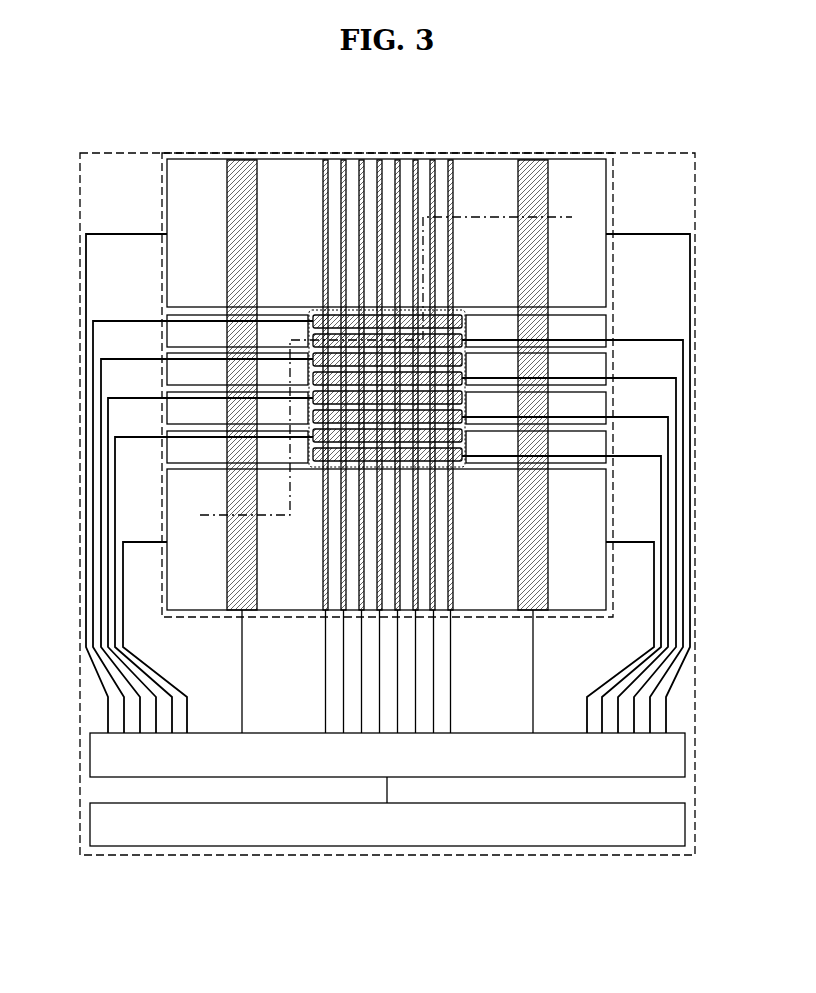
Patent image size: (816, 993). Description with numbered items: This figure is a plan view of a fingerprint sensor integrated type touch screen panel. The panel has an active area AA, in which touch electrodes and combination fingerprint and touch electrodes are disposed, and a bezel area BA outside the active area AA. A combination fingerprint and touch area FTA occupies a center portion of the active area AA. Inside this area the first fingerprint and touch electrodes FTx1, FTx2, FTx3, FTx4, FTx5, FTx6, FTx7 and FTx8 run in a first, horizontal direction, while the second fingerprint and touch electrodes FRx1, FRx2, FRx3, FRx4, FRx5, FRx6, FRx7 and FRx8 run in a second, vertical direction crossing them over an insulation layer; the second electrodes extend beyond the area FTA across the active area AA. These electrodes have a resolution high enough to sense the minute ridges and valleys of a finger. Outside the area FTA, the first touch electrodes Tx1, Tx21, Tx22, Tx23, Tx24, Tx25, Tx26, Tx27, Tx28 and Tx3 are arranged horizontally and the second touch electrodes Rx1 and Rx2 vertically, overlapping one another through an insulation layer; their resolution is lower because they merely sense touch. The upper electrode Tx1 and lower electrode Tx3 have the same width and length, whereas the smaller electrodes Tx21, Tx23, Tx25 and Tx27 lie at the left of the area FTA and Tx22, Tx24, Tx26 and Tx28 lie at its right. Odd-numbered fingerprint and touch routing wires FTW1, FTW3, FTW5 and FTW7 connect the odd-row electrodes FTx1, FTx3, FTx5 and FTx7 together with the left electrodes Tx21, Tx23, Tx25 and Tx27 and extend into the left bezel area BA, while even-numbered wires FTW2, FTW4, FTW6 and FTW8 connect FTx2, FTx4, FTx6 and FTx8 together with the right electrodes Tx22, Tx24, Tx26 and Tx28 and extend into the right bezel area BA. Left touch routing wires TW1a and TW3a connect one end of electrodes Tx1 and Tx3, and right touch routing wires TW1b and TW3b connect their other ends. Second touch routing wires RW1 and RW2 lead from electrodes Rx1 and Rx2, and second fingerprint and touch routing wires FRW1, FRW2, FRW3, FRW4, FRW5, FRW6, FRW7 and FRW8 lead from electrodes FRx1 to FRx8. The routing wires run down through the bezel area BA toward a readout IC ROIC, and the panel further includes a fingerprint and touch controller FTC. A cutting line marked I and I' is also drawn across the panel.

The 1-1 touch electrode Tx1 is at (607, 192).
The 1-2 left touch electrode Tx21 is at (166, 335).
The 1-2 right touch electrode Tx22 is at (607, 328).
The 1-2 left touch electrode Tx23 is at (166, 373).
The 1-2 right touch electrode Tx24 is at (607, 367).
The 1-2 left touch electrode Tx25 is at (166, 412).
The 1-2 right touch electrode Tx26 is at (607, 405).
The 1-2 left touch electrode Tx27 is at (166, 450).
The 1-2 right touch electrode Tx28 is at (607, 443).
The 1-3 touch electrode Tx3 is at (607, 500).
The second touch electrode Rx1 is at (243, 164).
The second touch electrode Rx2 is at (534, 164).
The second fingerprint and touch electrode FRx1 is at (325, 160).
The second fingerprint and touch electrode FRx2 is at (343, 160).
The second fingerprint and touch electrode FRx3 is at (361, 160).
The second fingerprint and touch electrode FRx4 is at (379, 160).
The second fingerprint and touch electrode FRx5 is at (397, 160).
The second fingerprint and touch electrode FRx6 is at (415, 160).
The second fingerprint and touch electrode FRx7 is at (433, 160).
The second fingerprint and touch electrode FRx8 is at (450, 160).
The combination fingerprint and touch area FTA is at (315, 310).
The first fingerprint and touch electrode FTx1 is at (447, 321).
The first fingerprint and touch electrode FTx2 is at (438, 340).
The first fingerprint and touch electrode FTx3 is at (426, 359).
The first fingerprint and touch electrode FTx4 is at (412, 378).
The first fingerprint and touch electrode FTx5 is at (415, 400).
The first fingerprint and touch electrode FTx6 is at (428, 419).
The first fingerprint and touch electrode FTx7 is at (440, 438).
The first fingerprint and touch electrode FTx8 is at (452, 457).
The 1-1 left touch routing wire TW1a is at (86, 285).
The 1-1 right touch routing wire TW1b is at (690, 286).
The 1-1 left touch routing wire TW3a is at (123, 613).
The 1-1 right touch routing wire TW3b is at (654, 613).
The 1-1 fingerprint and touch routing wire FTW1 is at (93, 489).
The 1-2 fingerprint and touch routing wire FTW2 is at (683, 488).
The 1-1 fingerprint and touch routing wire FTW3 is at (101, 515).
The 1-2 fingerprint and touch routing wire FTW4 is at (676, 515).
The 1-1 fingerprint and touch routing wire FTW5 is at (108, 540).
The 1-2 fingerprint and touch routing wire FTW6 is at (668, 542).
The 1-1 fingerprint and touch routing wire FTW7 is at (115, 567).
The 1-2 fingerprint and touch routing wire FTW8 is at (661, 567).
The second touch routing wire RW1 is at (242, 653).
The second touch routing wire RW2 is at (534, 653).
The second fingerprint and touch routing wire FRW1 is at (325, 653).
The second fingerprint and touch routing wire FRW2 is at (343, 670).
The second fingerprint and touch routing wire FRW3 is at (361, 687).
The second fingerprint and touch routing wire FRW4 is at (379, 704).
The second fingerprint and touch routing wire FRW5 is at (398, 651).
The second fingerprint and touch routing wire FRW6 is at (416, 670).
The second fingerprint and touch routing wire FRW7 is at (434, 687).
The second fingerprint and touch routing wire FRW8 is at (451, 706).
The readout IC ROIC is at (387, 768).
The fingerprint and touch controller FTC is at (387, 824).
The active area AA is at (588, 153).
The bezel area BA is at (658, 153).
The section line I is at (306, 431).
The section line I' is at (505, 275).